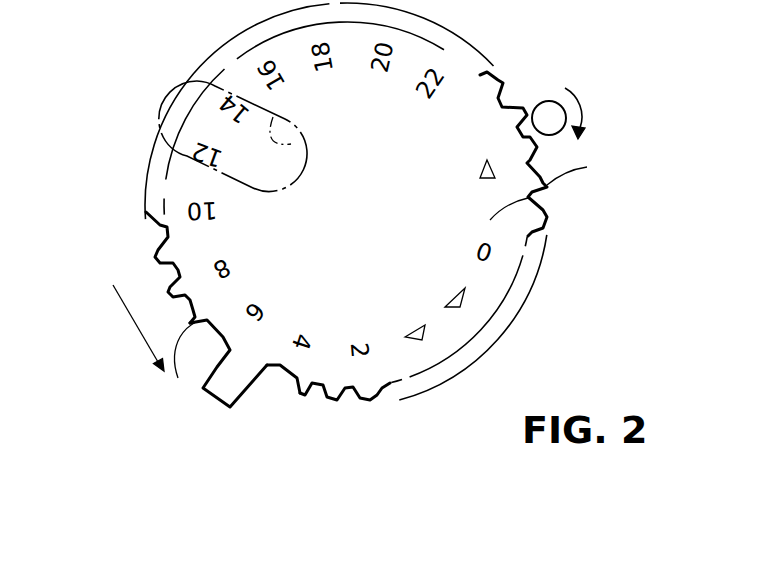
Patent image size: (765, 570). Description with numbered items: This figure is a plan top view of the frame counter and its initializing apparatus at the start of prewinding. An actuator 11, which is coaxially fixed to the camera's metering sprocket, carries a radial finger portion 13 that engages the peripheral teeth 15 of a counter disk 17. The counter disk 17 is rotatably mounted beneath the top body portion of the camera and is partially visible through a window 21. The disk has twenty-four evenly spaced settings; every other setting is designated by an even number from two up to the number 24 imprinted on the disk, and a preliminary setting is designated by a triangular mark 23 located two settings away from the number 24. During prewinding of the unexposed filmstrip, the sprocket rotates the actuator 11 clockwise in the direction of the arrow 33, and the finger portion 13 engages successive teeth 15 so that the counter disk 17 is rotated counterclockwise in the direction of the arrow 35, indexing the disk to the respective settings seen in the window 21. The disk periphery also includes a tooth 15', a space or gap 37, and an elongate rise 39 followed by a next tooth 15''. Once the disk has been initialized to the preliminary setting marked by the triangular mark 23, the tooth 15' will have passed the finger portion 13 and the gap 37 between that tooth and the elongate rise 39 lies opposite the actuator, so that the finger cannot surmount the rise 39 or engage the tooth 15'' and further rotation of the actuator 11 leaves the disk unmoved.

The actuator 11 is at (545, 108).
The arrow 33 is at (565, 90).
The window 21 is at (303, 137).
The radial finger portion 13 is at (517, 135).
The peripheral teeth 15 is at (581, 163).
The counter disk 17 is at (528, 198).
The triangular mark 23 is at (483, 177).
The number "24" 24 is at (465, 120).
The arrow 35 is at (132, 300).
The next tooth 15'' is at (169, 368).
The elongate rise 39 is at (202, 388).
The space or gap 37 is at (272, 367).
The tooth 15' is at (343, 434).